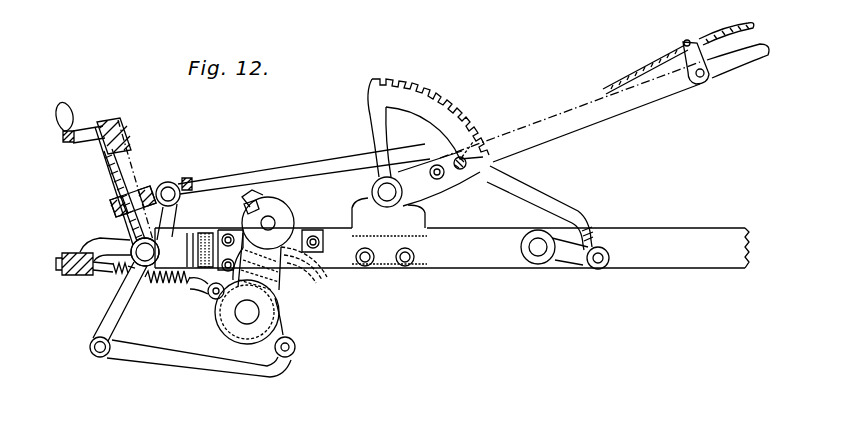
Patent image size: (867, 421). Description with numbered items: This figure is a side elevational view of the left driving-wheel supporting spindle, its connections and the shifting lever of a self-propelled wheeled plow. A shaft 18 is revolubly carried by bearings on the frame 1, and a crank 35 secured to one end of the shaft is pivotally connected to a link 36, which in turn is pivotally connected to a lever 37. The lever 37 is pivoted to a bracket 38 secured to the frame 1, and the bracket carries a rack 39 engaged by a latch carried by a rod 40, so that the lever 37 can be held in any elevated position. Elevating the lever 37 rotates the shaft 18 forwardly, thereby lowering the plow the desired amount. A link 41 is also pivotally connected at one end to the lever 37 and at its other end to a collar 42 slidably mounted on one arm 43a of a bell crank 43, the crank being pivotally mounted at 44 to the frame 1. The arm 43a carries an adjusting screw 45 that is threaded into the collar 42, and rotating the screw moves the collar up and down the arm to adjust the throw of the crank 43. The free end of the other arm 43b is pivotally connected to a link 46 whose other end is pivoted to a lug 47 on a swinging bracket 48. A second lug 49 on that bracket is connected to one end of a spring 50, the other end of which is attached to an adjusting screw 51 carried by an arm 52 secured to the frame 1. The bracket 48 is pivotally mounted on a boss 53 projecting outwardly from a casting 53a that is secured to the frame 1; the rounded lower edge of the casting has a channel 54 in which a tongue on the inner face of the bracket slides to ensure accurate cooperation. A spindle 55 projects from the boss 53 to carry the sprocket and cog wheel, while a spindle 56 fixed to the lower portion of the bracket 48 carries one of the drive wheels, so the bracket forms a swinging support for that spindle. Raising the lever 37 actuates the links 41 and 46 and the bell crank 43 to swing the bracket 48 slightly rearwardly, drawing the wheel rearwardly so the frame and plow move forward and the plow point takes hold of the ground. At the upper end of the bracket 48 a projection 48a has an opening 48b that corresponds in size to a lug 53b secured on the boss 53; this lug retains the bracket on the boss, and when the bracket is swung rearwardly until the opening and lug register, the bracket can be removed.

The frame 1 is at (452, 248).
The shaft 18 is at (536, 252).
The crank 35 is at (576, 262).
The link 36 is at (566, 206).
The lever 37 is at (597, 118).
The bracket 38 is at (440, 196).
The rack 39 is at (442, 118).
The rod 40 is at (650, 67).
The link 41 is at (304, 163).
The collar 42 is at (112, 208).
The bell crank 43 is at (154, 242).
The arm of bell crank 43a is at (137, 165).
The arm of bell crank 43b is at (117, 325).
The pivot 44 is at (132, 250).
The adjusting screw 45 is at (118, 178).
The link 46 is at (193, 362).
The lug 47 is at (288, 333).
The swinging bracket 48 is at (282, 311).
The projection 48a is at (243, 202).
The opening 48b is at (245, 212).
The lug 49 is at (214, 299).
The spring 50 is at (175, 288).
The adjusting screw 51 is at (58, 268).
The arm 52 is at (80, 248).
The boss 53 is at (284, 213).
The casting 53a is at (313, 273).
The lug 53b is at (270, 195).
The channel 54 is at (297, 277).
The spindle 55 is at (276, 223).
The spindle 56 is at (246, 313).